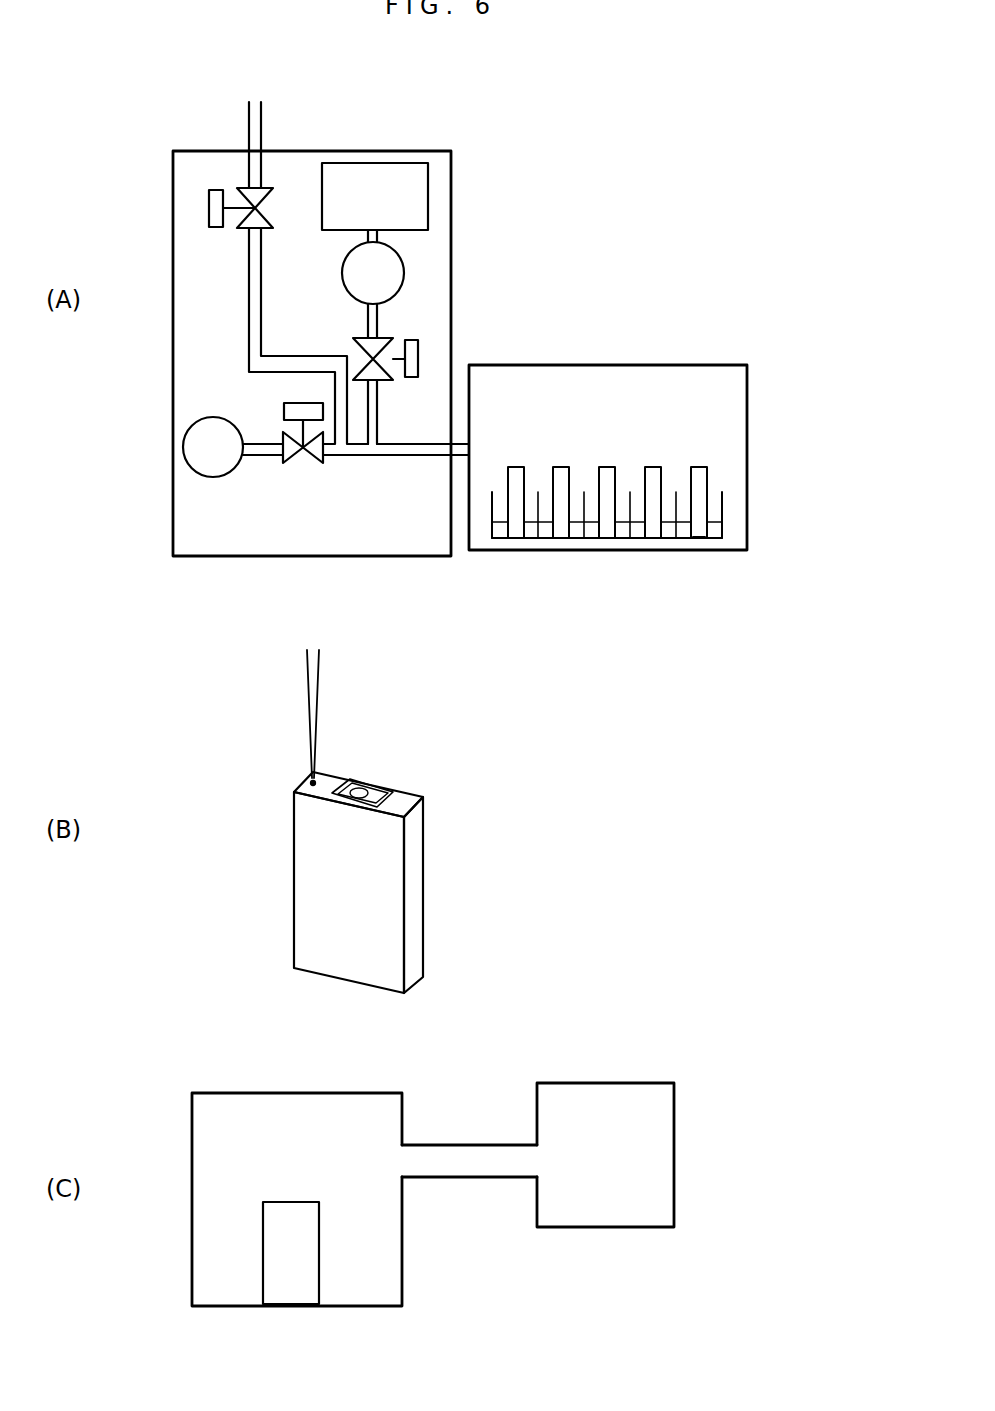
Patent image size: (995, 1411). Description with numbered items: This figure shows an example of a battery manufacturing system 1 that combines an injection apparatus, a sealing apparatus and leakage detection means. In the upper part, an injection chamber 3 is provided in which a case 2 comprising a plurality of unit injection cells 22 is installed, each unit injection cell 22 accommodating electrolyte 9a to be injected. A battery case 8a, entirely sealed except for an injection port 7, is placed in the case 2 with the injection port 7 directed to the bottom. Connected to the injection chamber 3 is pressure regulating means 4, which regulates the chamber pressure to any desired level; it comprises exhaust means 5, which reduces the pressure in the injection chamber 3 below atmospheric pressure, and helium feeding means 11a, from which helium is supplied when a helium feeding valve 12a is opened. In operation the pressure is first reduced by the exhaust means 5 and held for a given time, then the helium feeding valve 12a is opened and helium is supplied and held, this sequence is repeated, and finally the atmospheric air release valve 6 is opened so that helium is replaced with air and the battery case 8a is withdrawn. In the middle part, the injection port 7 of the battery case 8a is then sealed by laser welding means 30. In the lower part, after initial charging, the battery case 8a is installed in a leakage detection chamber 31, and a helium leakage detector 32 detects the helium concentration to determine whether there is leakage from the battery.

The electrolyte injection apparatus 1 is at (627, 233).
The case 2 is at (607, 469).
The injection chamber 3 is at (667, 360).
The pressure regulating means 4 is at (333, 557).
The exhaust means 5 is at (222, 468).
The atmospheric air release valve 6 is at (232, 182).
The injection port 7 is at (700, 537).
The battery case 8a is at (705, 487).
The electrolyte 9a is at (532, 532).
The helium feeding means 11a is at (435, 168).
The helium feeding valve 12a is at (428, 355).
The unit injection cell 22 is at (532, 502).
The laser welding means 30 is at (322, 699).
The leakage detection chamber 31 is at (190, 1130).
The helium leakage detector 32 is at (613, 1083).